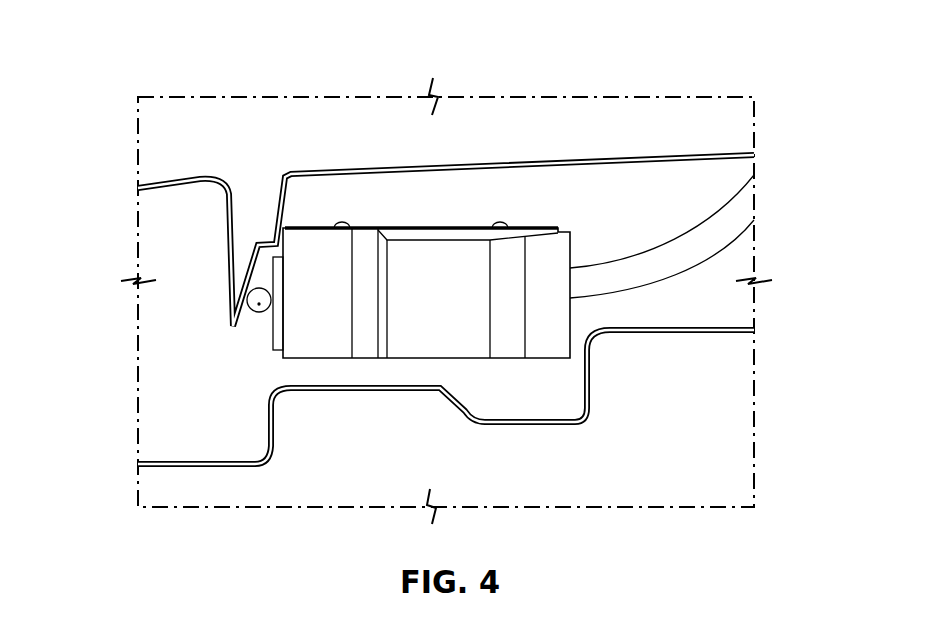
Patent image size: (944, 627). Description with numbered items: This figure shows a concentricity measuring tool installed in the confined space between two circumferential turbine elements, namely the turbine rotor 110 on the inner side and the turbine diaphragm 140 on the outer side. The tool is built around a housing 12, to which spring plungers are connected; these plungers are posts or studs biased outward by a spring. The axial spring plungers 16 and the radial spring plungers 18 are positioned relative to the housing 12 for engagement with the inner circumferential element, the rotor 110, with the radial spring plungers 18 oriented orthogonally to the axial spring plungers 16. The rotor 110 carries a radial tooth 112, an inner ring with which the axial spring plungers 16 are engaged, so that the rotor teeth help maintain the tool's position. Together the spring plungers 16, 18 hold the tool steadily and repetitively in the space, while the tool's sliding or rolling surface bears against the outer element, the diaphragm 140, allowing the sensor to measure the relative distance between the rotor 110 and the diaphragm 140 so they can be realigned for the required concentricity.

The turbine rotor 110 is at (700, 113).
The radial tooth 112 is at (240, 236).
The turbine diaphragm 140 is at (677, 457).
The housing 12 is at (440, 300).
The radial spring plungers 18 is at (347, 226).
The axial spring plungers 16 is at (259, 305).